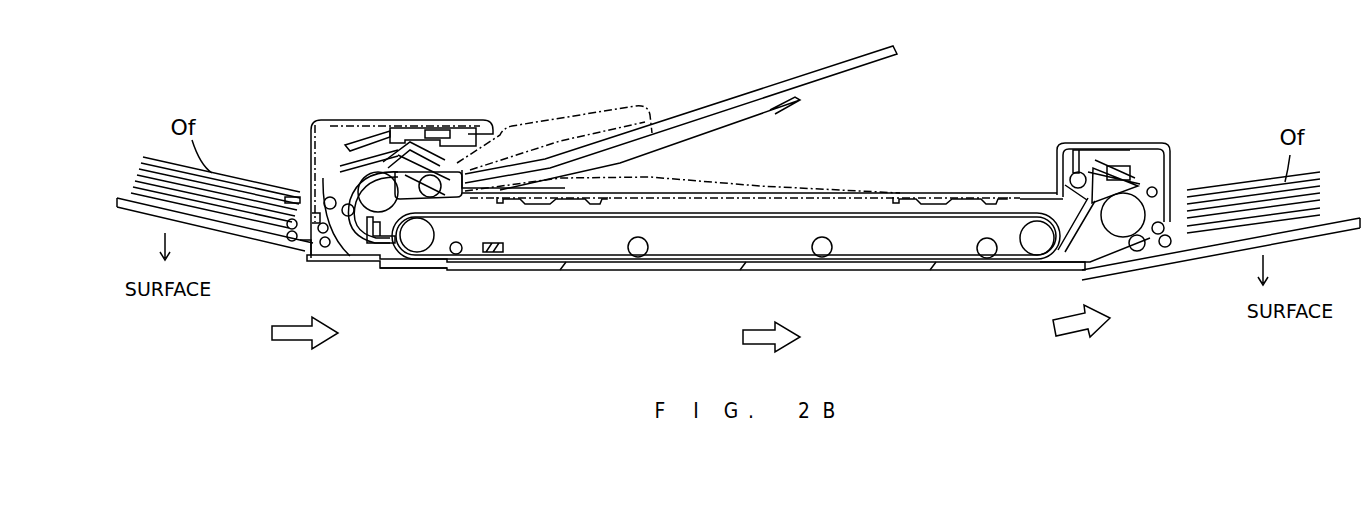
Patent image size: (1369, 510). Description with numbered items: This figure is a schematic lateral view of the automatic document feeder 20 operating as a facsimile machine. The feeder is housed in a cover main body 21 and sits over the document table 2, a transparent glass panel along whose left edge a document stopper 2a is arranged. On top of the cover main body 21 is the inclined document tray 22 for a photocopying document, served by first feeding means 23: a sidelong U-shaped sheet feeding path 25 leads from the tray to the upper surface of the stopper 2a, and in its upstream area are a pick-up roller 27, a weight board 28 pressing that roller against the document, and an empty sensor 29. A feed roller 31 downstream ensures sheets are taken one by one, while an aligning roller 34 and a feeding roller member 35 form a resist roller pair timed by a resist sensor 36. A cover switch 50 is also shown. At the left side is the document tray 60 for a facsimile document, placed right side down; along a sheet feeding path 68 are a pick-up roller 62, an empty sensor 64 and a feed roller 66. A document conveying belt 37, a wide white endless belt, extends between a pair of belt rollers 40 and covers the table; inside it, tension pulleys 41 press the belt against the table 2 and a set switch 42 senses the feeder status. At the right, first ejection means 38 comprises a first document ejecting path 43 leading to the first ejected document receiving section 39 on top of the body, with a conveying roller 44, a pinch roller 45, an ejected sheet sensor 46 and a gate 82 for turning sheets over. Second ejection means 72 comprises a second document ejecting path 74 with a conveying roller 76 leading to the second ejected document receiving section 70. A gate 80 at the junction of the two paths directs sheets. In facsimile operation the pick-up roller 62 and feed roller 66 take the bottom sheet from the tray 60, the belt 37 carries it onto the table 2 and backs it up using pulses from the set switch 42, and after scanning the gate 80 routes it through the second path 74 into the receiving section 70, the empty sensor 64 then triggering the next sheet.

The document table 2 is at (578, 266).
The document stopper 2a is at (442, 268).
The automatic document feeder 20 is at (866, 183).
The cover main body 21 is at (363, 125).
The document tray 22 is at (718, 110).
The first feeding means 23 is at (330, 130).
The sheet feeding path 25 is at (316, 158).
The pick-up roller 27 is at (433, 192).
The weight board 28 is at (426, 170).
The empty sensor 29 is at (440, 140).
The feed roller 31 is at (355, 258).
The aligning roller 34 is at (338, 262).
The feeding roller member 35 is at (343, 205).
The resist sensor 36 is at (330, 197).
The document conveying belt 37 is at (700, 265).
The first ejection means 38 is at (1177, 153).
The first ejected document receiving section 39 is at (991, 192).
The belt rollers 40 is at (418, 244).
The tension pulleys 41 is at (632, 241).
The set switch 42 is at (500, 246).
The first document ejecting path 43 is at (1168, 205).
The conveying roller 44 is at (1122, 237).
The pinch roller 45 is at (1160, 180).
The ejected sheet sensor 46 is at (1118, 170).
The cover switch 50 is at (470, 132).
The document tray 60 is at (122, 210).
The pick-up roller 62 is at (287, 242).
The empty sensor 64 is at (318, 235).
The feed roller 66 is at (320, 250).
The sheet feeding path 68 is at (372, 262).
The second ejected document receiving section 70 is at (1296, 248).
The second ejection means 72 is at (1180, 272).
The second document ejecting path 74 is at (1143, 252).
The conveying roller 76 is at (1172, 246).
The gate 80 is at (1148, 252).
The gate 82 is at (1088, 168).